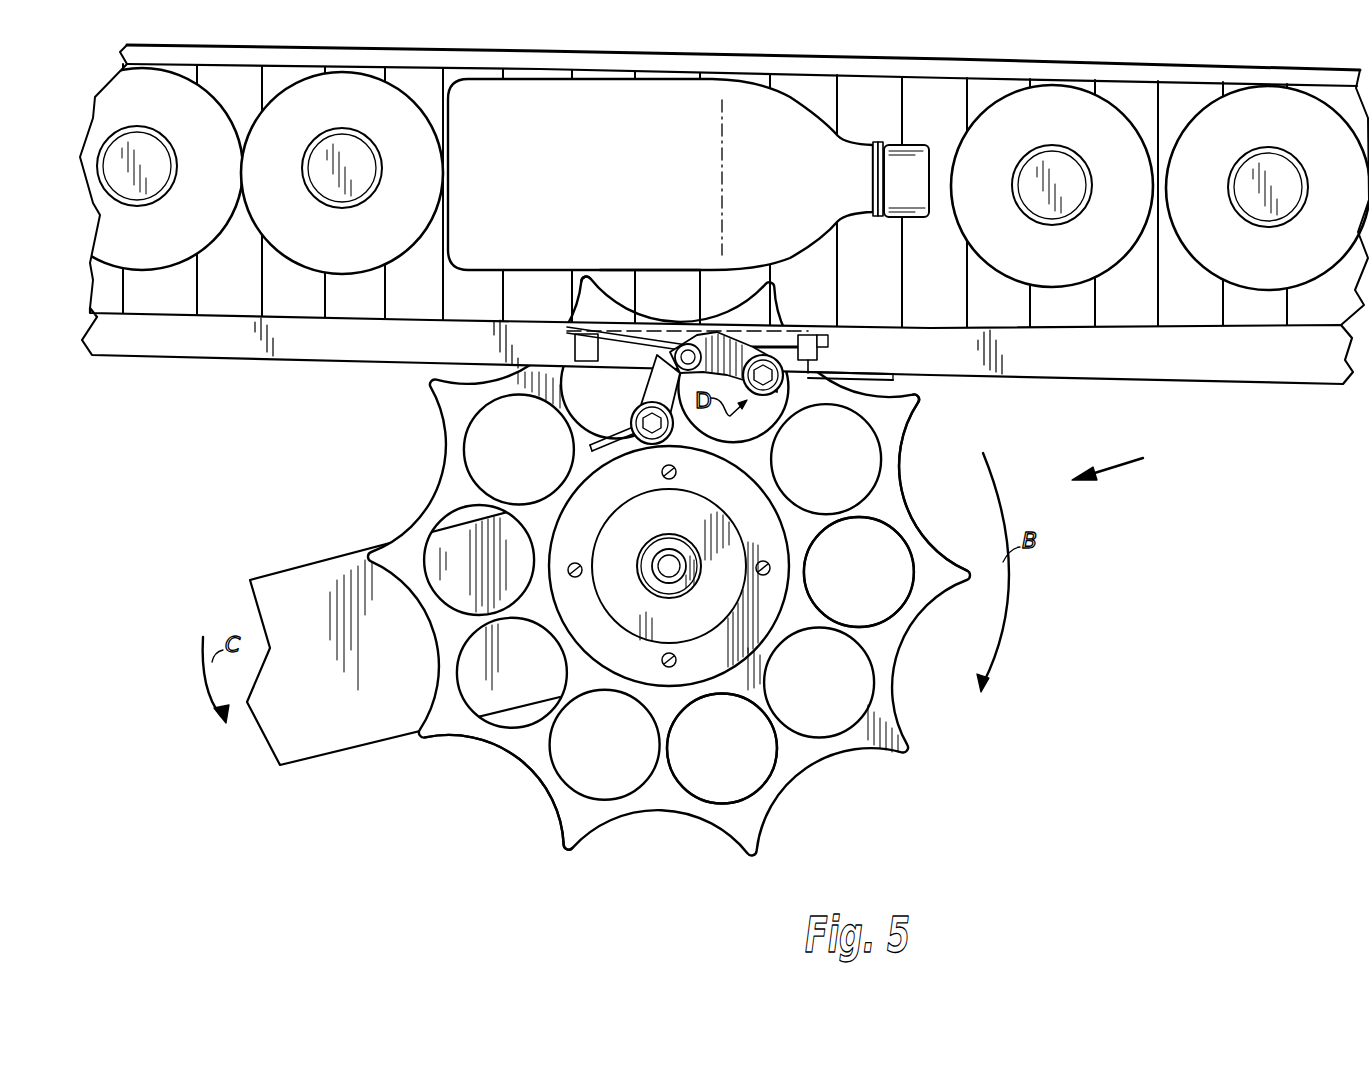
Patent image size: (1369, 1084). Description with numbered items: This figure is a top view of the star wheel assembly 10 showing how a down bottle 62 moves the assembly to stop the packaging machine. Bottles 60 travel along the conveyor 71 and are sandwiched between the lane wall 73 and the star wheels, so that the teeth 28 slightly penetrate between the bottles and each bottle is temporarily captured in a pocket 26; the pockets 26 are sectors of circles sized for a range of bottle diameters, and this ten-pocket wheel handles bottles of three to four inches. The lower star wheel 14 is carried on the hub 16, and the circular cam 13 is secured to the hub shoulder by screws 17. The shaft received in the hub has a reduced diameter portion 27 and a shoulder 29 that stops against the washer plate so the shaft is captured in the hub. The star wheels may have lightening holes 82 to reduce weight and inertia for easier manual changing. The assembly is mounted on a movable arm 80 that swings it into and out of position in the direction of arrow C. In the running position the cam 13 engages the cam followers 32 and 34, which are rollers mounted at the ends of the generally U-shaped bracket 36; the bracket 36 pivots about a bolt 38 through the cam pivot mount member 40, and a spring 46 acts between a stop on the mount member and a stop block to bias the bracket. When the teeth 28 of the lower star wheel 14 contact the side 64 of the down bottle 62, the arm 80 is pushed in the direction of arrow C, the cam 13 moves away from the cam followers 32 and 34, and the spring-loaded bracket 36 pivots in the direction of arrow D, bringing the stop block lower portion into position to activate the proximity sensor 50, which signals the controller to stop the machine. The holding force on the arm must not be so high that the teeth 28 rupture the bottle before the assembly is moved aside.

The star wheel assembly 10 is at (1150, 458).
The cam 13 is at (583, 550).
The lower star wheel 14 is at (460, 470).
The hub 16 is at (606, 590).
The screws 17 is at (678, 475).
The pockets 26 is at (912, 522).
The reduced diameter portion 27 is at (665, 590).
The teeth 28 is at (586, 268).
The shoulder 29 is at (694, 555).
The cam follower 32 is at (776, 398).
The cam follower 34 is at (646, 446).
The bracket 36 is at (640, 382).
The bolt 38 is at (688, 344).
The cam pivot mount member 40 is at (363, 351).
The spring 46 is at (578, 338).
The sensor 50 is at (816, 326).
The bottles 60 is at (999, 171).
The down bottle 62 is at (650, 187).
The side of down bottle 64 is at (661, 277).
The conveyor 71 is at (944, 121).
The lane wall 73 is at (880, 72).
The movable arm 80 is at (393, 693).
The lightening holes 82 is at (893, 584).